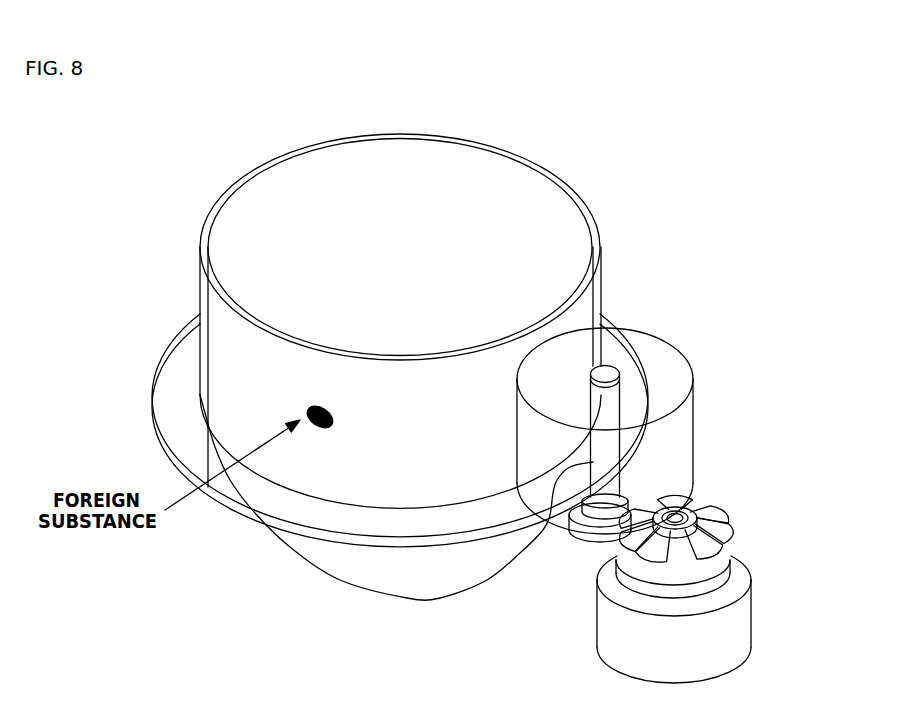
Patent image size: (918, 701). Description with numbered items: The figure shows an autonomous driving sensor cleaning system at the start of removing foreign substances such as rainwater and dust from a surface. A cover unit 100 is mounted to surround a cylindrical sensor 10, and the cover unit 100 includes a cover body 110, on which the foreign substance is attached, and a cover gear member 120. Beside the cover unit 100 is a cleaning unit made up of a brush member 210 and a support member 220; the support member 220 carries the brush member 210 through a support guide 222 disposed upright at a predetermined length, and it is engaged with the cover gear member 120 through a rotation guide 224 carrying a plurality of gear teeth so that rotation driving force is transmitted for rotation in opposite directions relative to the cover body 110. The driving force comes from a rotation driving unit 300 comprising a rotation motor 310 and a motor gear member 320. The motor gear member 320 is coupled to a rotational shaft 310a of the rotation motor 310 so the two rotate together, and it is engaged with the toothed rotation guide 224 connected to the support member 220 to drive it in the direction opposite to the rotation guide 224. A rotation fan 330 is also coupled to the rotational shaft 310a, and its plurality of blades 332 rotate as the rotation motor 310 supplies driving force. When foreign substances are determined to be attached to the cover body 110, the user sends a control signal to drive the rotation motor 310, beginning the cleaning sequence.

The sensor 10 is at (254, 543).
The cover unit 100 is at (136, 198).
The cover body 110 is at (207, 230).
The cover gear member 120 is at (172, 344).
The brush member 210 is at (652, 342).
The support member 220 is at (579, 653).
The support guide 222 is at (577, 521).
The rotation guide 224 is at (576, 541).
The rotation driving unit 300 is at (848, 447).
The rotation motor 310 is at (740, 606).
The rotational shaft 310a is at (676, 518).
The motor gear member 320 is at (700, 543).
The rotation fan 330 is at (698, 512).
The blades 332 is at (689, 522).